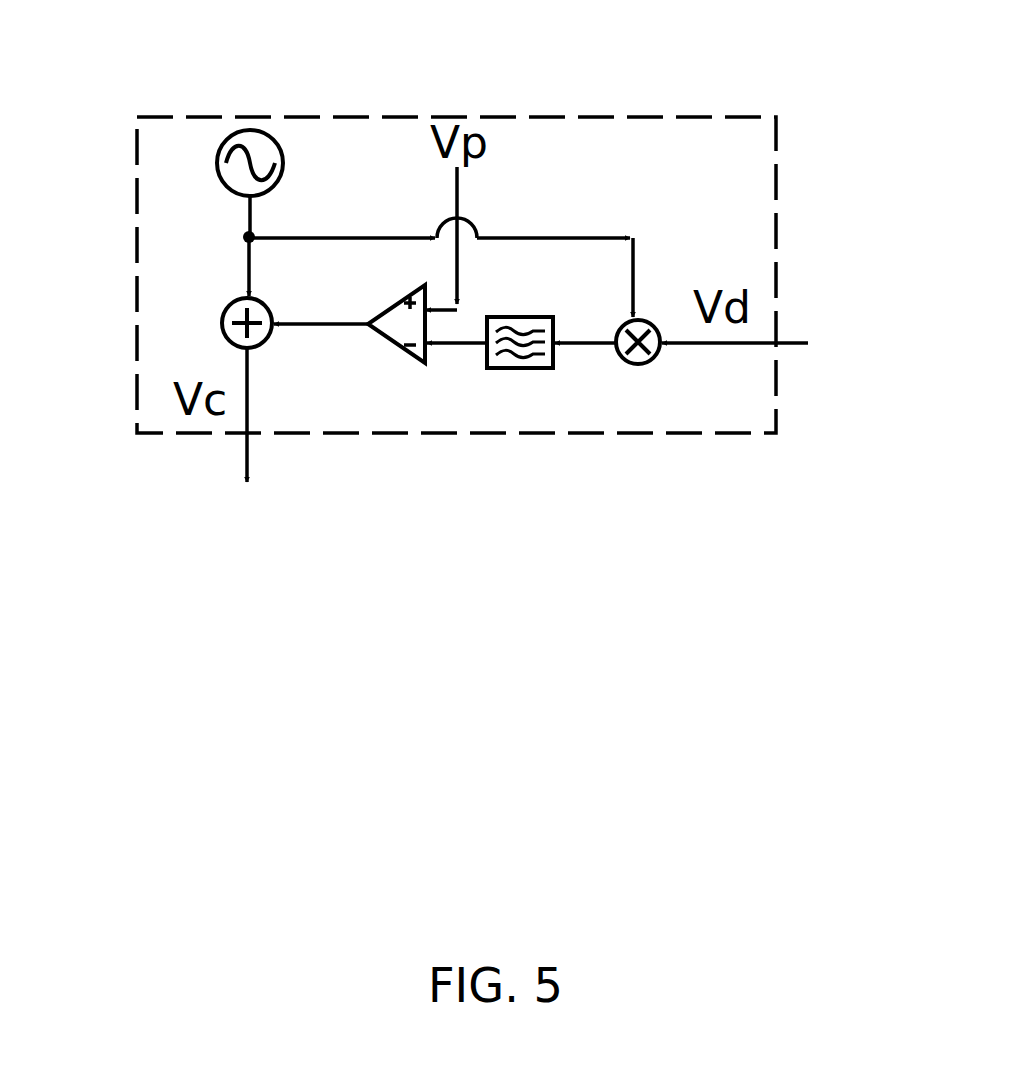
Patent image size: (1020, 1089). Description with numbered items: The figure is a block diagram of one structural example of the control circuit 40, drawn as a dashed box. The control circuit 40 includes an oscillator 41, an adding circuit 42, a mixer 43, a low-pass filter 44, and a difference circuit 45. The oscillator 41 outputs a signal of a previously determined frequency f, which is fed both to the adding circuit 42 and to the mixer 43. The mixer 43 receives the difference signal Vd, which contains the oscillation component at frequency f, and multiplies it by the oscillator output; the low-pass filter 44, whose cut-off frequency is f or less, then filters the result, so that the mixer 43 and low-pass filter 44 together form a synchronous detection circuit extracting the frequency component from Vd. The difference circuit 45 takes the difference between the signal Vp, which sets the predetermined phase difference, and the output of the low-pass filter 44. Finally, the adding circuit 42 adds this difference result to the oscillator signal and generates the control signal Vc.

The control circuit 40 is at (778, 165).
The oscillator 41 is at (263, 148).
The adding circuit 42 is at (220, 323).
The mixer 43 is at (657, 320).
The low-pass filter 44 is at (522, 308).
The difference circuit 45 is at (410, 290).